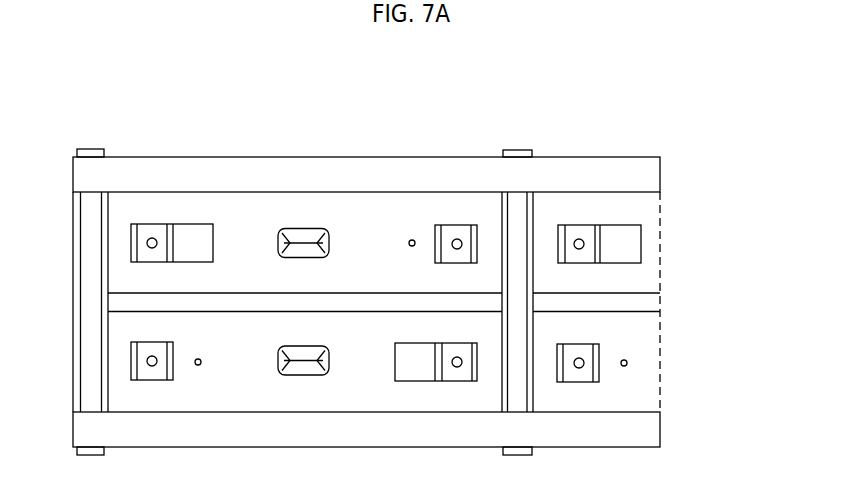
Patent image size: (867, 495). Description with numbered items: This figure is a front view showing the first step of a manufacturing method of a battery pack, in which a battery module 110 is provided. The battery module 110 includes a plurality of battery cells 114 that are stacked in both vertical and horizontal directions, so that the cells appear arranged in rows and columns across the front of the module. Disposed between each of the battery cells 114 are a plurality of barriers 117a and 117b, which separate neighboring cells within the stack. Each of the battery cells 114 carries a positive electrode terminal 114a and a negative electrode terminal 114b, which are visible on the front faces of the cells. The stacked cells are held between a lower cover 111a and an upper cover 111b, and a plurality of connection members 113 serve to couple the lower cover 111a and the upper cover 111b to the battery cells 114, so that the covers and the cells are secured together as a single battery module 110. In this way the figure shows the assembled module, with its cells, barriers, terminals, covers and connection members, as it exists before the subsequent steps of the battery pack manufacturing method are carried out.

The battery module 110 is at (637, 118).
The lower cover 111a is at (650, 430).
The upper cover 111b is at (650, 175).
The connection member 113 is at (518, 150).
The battery cell 114 is at (302, 202).
The positive electrode terminal 114a is at (456, 228).
The negative electrode terminal 114b is at (150, 228).
The barrier 117a is at (535, 280).
The barrier 117b is at (649, 305).